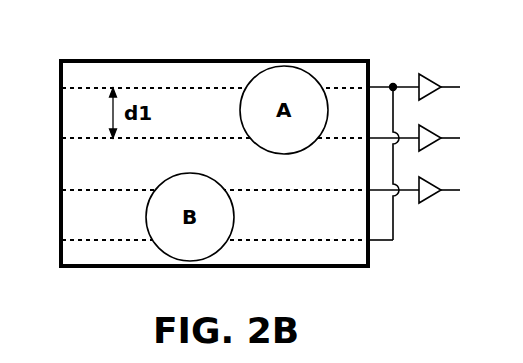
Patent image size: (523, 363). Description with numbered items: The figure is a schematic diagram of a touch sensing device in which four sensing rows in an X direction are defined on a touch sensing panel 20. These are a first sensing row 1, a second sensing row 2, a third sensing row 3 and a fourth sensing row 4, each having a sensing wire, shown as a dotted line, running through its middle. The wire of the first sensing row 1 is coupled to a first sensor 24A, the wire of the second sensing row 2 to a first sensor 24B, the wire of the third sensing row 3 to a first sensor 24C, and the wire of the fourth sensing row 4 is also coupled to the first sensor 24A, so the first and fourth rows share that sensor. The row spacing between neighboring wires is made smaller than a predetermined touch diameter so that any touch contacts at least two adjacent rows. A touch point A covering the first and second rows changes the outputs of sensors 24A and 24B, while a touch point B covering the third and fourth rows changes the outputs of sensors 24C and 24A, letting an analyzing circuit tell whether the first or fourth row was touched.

The first sensing row 1 is at (58, 64).
The second sensing row 2 is at (58, 113).
The third sensing row 3 is at (58, 165).
The fourth sensing row 4 is at (58, 218).
The touch sensing panel 20 is at (328, 60).
The first sensor 24A is at (436, 77).
The first sensor 24B is at (436, 129).
The first sensor 24C is at (436, 180).